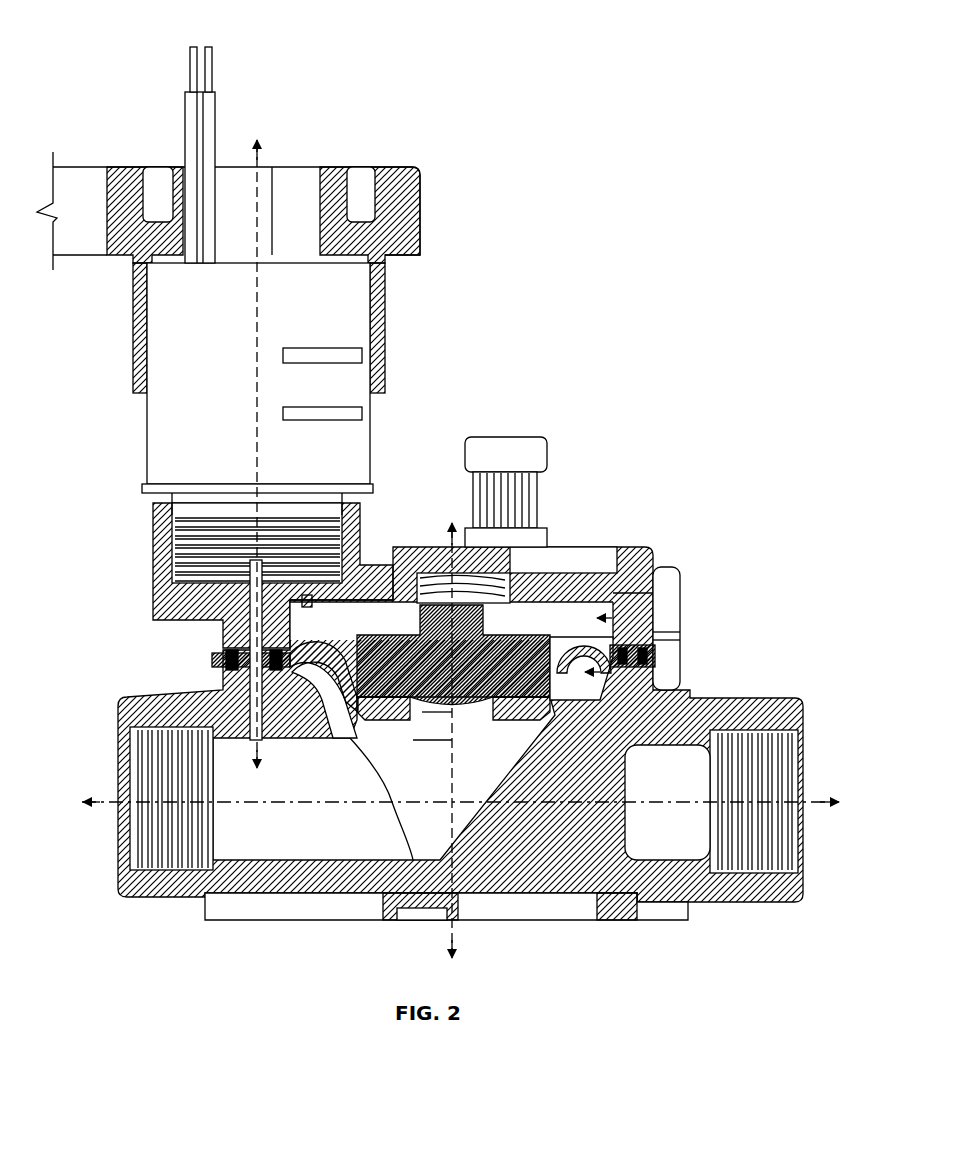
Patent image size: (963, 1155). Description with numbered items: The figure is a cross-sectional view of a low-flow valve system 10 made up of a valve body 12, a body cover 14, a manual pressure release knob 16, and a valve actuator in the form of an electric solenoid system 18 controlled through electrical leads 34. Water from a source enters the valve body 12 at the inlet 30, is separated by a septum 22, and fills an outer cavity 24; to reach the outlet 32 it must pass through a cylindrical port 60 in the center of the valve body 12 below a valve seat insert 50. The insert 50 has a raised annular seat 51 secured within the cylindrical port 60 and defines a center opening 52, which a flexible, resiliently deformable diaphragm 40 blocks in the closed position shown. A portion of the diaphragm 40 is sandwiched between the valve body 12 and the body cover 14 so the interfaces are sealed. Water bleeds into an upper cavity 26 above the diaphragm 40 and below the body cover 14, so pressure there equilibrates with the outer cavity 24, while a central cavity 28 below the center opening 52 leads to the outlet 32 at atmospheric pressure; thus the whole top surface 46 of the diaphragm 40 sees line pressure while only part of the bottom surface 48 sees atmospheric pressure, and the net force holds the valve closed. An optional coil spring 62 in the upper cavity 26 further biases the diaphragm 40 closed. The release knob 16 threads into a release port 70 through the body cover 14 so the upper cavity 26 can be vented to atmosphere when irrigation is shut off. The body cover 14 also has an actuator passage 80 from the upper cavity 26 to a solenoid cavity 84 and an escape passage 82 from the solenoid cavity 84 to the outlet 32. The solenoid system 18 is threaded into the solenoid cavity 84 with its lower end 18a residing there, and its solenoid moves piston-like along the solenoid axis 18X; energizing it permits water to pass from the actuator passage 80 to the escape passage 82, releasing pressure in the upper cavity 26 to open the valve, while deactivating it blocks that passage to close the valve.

The low-flow valve system 10 is at (583, 156).
The valve body 12 is at (637, 921).
The body cover 14 is at (680, 613).
The manual pressure release knob 16 is at (495, 437).
The electric solenoid system 18 is at (386, 318).
The lower end of the solenoid system 18a is at (327, 500).
The solenoid axis 18X is at (256, 456).
The septum 22 is at (628, 793).
The outer cavity 24 is at (668, 623).
The upper cavity 26 is at (655, 587).
The central cavity 28 is at (487, 775).
The inlet 30 is at (807, 852).
The outlet 32 is at (117, 822).
The electrical leads 34 is at (218, 100).
The diaphragm 40 is at (493, 633).
The top surface of the diaphragm 46 is at (600, 645).
The bottom surface of the diaphragm 48 is at (340, 685).
The valve seat insert 50 is at (660, 690).
The raised annular seat 51 is at (423, 712).
The center opening 52 is at (432, 770).
The cylindrical port 60 is at (487, 743).
The coil spring 62 is at (455, 575).
The release port 70 is at (550, 534).
The actuator passage 80 is at (306, 612).
The escape passage 82 is at (260, 745).
The solenoid cavity 84 is at (196, 590).